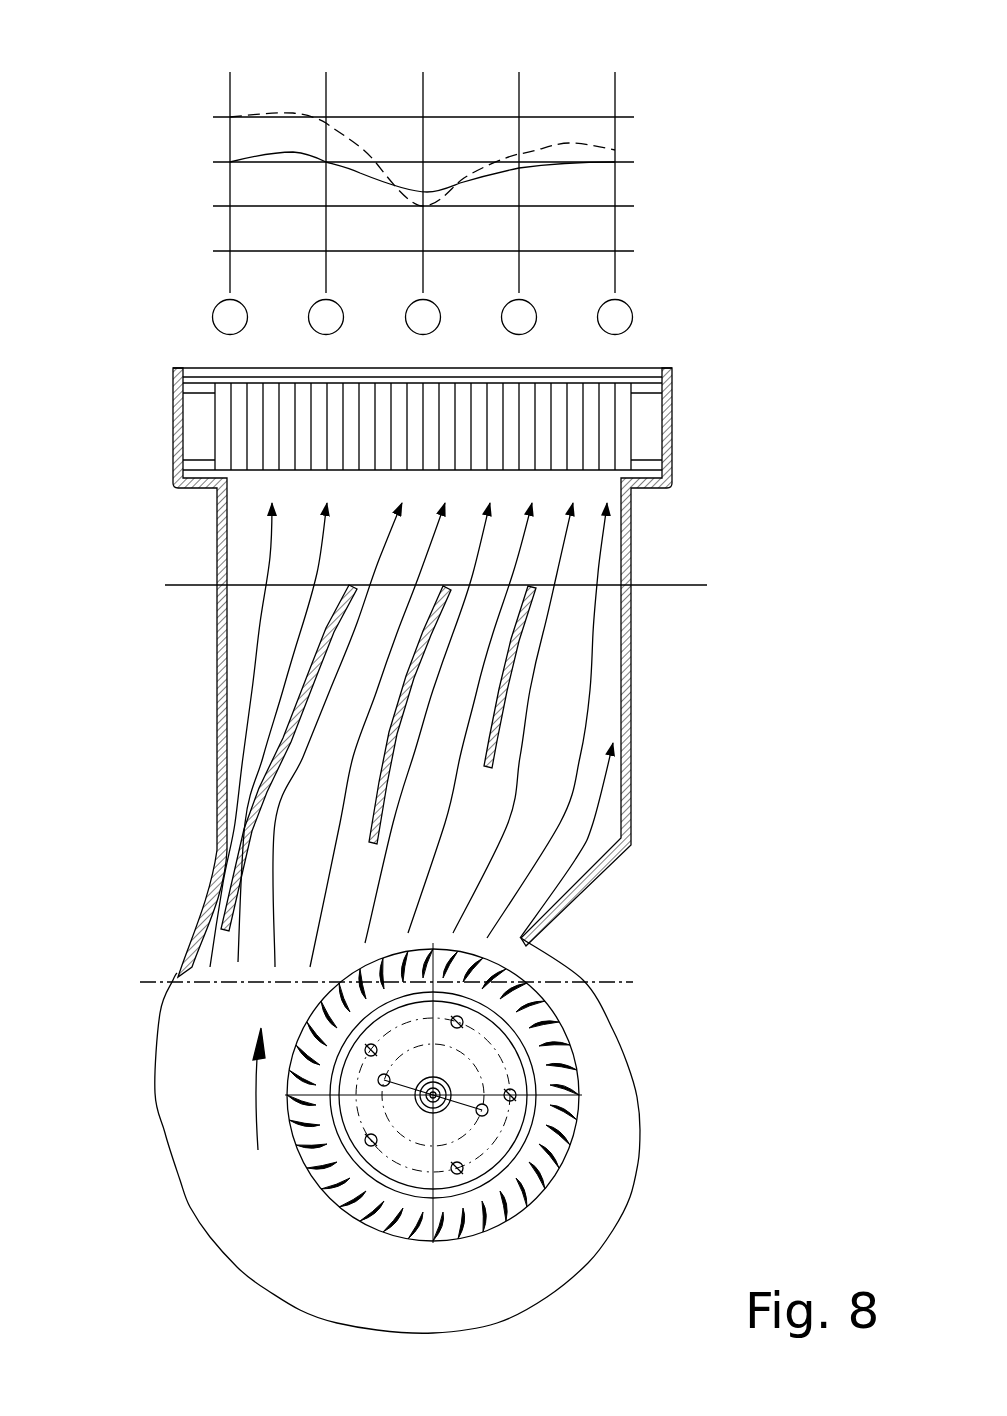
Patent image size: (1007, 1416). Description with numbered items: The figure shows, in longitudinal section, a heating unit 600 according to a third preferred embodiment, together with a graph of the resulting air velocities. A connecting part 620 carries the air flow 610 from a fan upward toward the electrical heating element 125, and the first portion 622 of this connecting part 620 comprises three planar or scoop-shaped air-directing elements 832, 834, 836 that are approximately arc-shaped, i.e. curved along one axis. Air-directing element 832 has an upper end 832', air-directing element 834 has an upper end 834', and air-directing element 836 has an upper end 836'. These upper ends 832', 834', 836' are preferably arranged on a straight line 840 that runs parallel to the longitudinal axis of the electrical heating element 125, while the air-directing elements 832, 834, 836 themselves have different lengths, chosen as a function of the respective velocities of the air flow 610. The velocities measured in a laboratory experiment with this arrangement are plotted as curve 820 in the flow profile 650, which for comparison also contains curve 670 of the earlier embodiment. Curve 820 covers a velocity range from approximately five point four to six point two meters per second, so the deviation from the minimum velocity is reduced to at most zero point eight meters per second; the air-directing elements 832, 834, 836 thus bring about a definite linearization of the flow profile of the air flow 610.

The heating unit 600 is at (714, 418).
The air flow 610 is at (513, 840).
The connecting part 620 is at (126, 462).
The first portion 622 is at (633, 746).
The electrical heating element 125 is at (614, 429).
The flow profile 650 is at (565, 68).
The curve 670 is at (578, 127).
The curve 820 is at (527, 170).
The air-directing element 832 is at (652, 643).
The air-directing element 834 is at (427, 690).
The air-directing element 836 is at (427, 758).
The upper end 832' is at (652, 643).
The upper end 834' is at (247, 690).
The upper end 836' is at (200, 758).
The straight line 840 is at (197, 585).